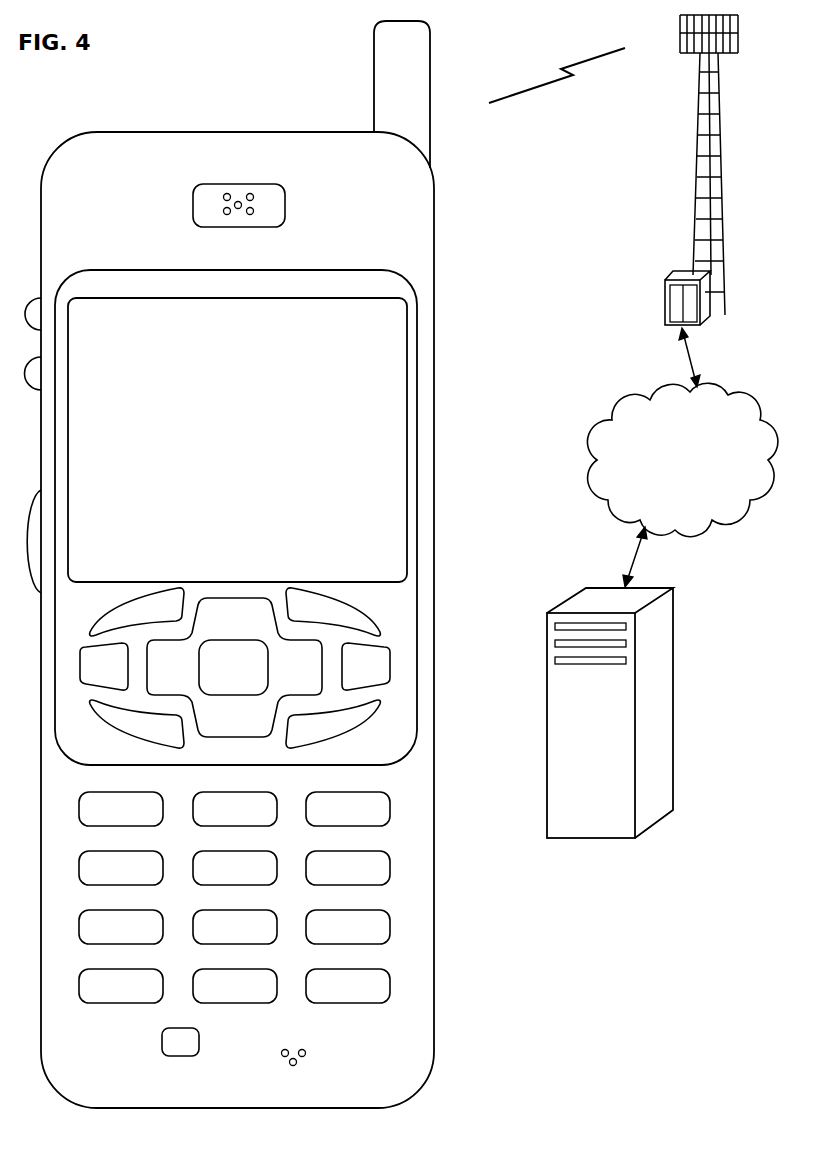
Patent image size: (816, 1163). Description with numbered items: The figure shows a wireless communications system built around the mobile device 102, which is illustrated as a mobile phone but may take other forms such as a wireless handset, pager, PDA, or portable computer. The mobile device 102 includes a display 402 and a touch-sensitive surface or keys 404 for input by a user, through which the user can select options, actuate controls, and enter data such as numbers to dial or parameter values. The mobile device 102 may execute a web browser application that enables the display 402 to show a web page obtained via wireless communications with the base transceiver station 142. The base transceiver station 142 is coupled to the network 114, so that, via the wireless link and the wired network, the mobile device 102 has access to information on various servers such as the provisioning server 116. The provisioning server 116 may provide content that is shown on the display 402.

The mobile device 102 is at (87, 1108).
The display 402 is at (408, 311).
The keys 404 is at (440, 973).
The base transceiver station 142 is at (692, 183).
The network 114 is at (606, 508).
The provisioning server 116 is at (590, 838).